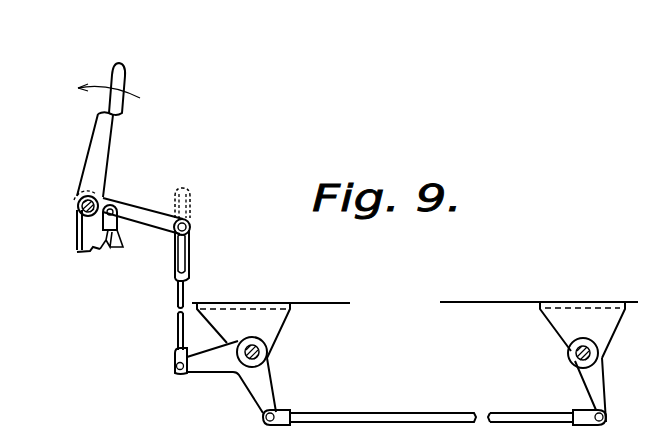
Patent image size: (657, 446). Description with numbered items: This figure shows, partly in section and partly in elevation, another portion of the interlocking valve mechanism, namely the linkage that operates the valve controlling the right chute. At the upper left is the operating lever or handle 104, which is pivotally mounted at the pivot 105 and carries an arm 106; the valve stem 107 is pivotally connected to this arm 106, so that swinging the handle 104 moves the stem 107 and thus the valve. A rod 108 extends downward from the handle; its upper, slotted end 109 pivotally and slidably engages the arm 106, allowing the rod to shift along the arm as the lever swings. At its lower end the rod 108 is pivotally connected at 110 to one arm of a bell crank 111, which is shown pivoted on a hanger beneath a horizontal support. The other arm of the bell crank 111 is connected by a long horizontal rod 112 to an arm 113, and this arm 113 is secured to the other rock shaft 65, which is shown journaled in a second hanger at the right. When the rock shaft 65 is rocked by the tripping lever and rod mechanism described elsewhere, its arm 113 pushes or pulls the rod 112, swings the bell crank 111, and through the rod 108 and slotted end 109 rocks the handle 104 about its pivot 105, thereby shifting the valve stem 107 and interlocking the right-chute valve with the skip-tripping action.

The operating lever 104 is at (108, 165).
The pivot 105 is at (77, 209).
The arm 106 is at (155, 215).
The valve stem 107 is at (100, 249).
The rod 108 is at (187, 290).
The slotted end 109 is at (190, 252).
The pivotal connection 110 is at (177, 370).
The bell crank 111 is at (222, 365).
The rod 112 is at (380, 400).
The rock shaft 65 is at (580, 354).
The arm 113 is at (603, 396).